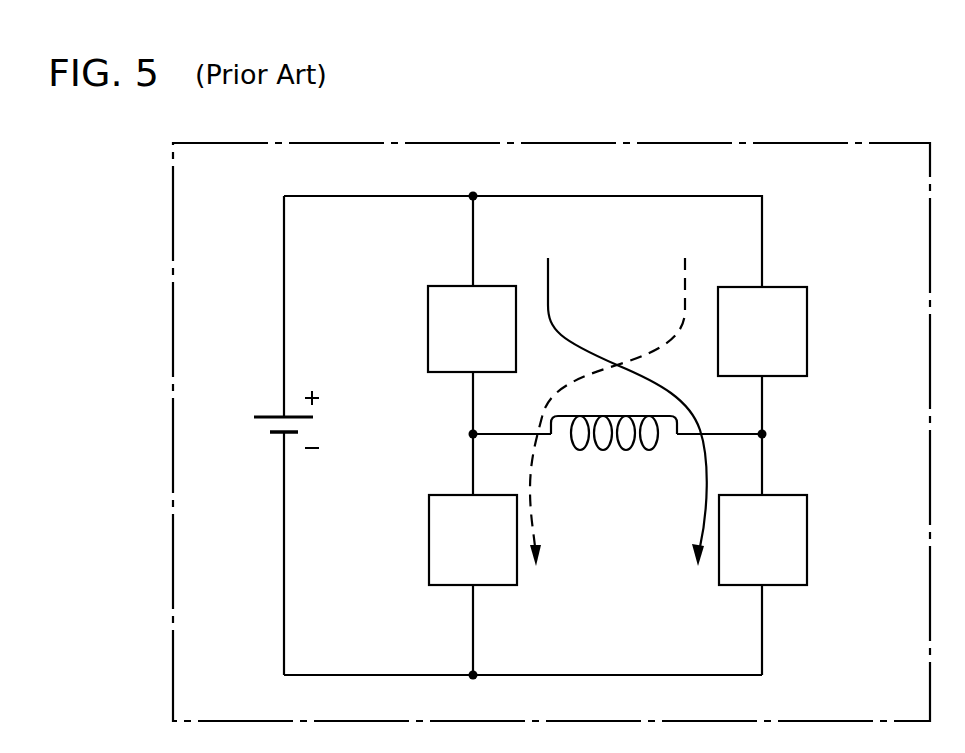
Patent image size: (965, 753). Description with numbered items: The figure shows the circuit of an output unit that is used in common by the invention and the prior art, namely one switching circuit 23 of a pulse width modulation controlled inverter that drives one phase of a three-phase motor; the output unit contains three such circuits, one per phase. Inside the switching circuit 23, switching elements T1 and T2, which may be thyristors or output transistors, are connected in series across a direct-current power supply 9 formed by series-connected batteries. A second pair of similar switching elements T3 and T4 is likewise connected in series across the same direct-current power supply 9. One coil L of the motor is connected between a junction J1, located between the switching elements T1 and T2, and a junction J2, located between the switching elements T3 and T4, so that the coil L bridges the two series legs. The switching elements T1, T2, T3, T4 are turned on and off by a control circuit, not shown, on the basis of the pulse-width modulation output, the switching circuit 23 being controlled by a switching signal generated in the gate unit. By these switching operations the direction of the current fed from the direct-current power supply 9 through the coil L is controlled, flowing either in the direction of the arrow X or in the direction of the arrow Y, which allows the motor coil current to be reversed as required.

The switching circuit 23 is at (707, 138).
The direct-current power supply 9 is at (272, 425).
The switching element T1 is at (472, 329).
The switching element T2 is at (473, 540).
The switching element T3 is at (762, 331).
The switching element T4 is at (763, 540).
The junction J1 is at (469, 433).
The junction J2 is at (766, 434).
The coil L is at (610, 450).
The arrow X is at (613, 392).
The arrow Y is at (623, 392).